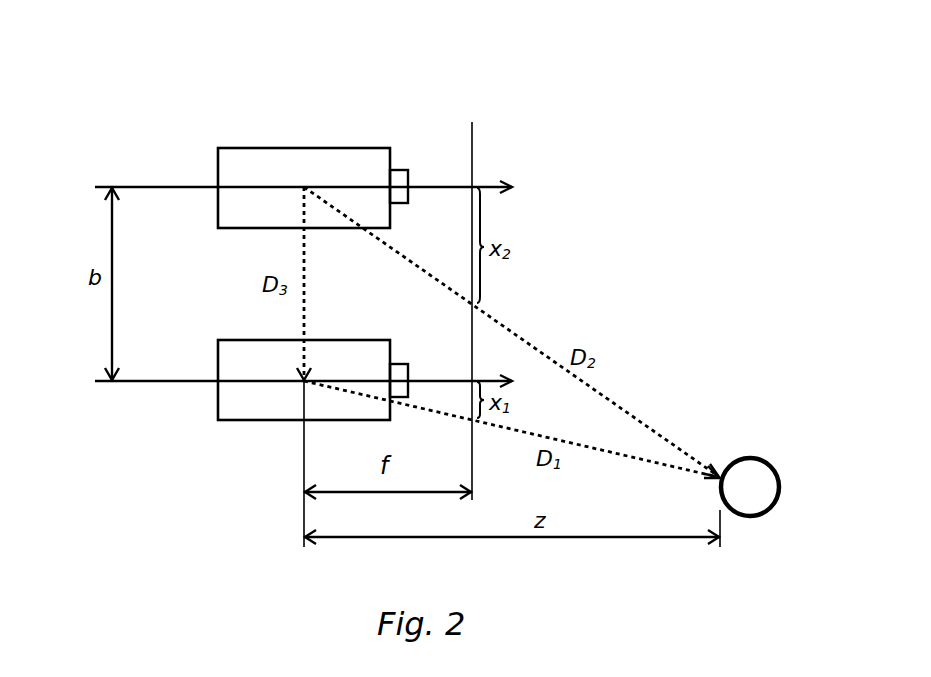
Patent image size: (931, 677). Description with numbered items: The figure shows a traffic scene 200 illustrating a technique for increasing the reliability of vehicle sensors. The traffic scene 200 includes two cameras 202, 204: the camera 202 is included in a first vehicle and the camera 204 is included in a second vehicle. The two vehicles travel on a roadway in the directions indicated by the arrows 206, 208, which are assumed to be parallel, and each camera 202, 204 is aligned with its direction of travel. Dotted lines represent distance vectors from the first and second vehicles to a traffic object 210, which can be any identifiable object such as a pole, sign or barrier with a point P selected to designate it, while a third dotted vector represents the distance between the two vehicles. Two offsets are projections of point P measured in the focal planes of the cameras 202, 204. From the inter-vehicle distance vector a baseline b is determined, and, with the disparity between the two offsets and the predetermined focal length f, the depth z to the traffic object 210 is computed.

The traffic scene 200 is at (445, 62).
The camera 202 is at (218, 400).
The camera 204 is at (218, 205).
The arrow 206 is at (141, 381).
The arrow 208 is at (148, 187).
The traffic object 210 is at (783, 490).